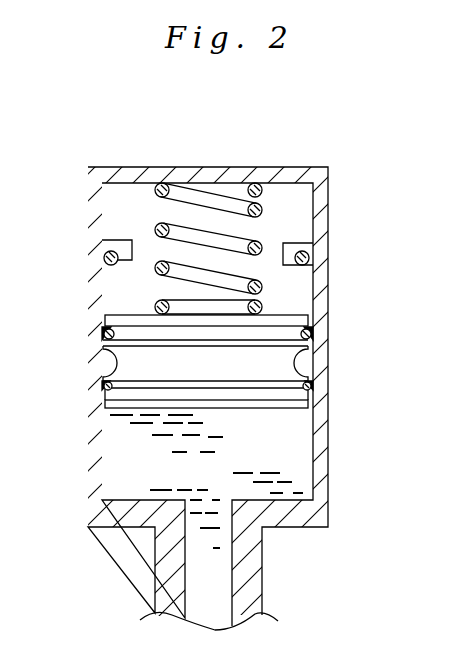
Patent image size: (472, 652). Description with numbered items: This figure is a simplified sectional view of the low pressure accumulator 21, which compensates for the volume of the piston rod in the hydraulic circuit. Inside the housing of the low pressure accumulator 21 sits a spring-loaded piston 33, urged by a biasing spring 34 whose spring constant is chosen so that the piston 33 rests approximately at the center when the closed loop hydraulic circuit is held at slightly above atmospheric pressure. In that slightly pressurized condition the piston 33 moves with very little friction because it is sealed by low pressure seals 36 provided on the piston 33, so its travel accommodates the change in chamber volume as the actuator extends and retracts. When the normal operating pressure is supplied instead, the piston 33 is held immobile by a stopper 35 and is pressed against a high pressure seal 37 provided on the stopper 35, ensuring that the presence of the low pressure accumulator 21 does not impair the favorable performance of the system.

The low pressure accumulator 21 is at (352, 298).
The piston 33 is at (289, 367).
The biasing spring 34 is at (204, 191).
The stopper 35 is at (297, 242).
The low pressure seals 36 is at (101, 338).
The high pressure seal 37 is at (102, 272).